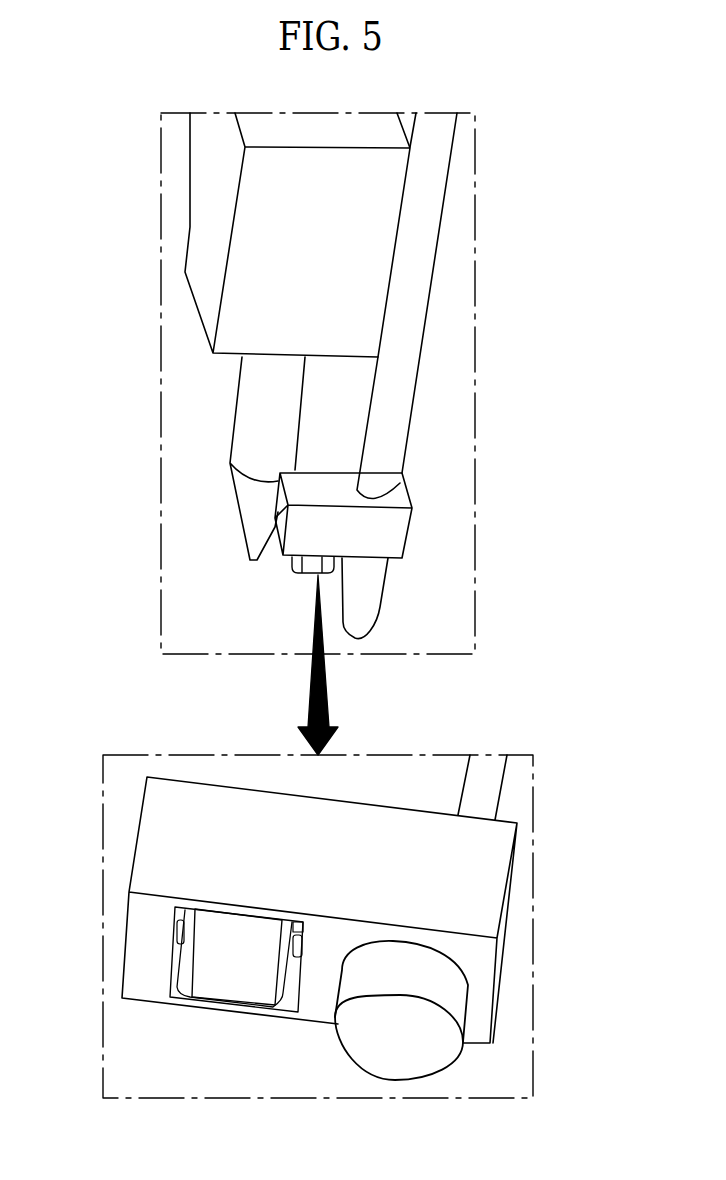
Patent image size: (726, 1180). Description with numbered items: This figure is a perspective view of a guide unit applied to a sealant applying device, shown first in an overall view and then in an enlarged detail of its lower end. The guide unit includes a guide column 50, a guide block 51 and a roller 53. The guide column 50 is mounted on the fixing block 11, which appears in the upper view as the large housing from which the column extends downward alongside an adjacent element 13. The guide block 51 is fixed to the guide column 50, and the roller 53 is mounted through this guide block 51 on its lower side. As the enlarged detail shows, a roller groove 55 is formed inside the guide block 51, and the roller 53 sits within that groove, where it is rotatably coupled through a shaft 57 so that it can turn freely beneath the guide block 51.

The fixing block 11 is at (208, 175).
The support pillar 13 is at (247, 417).
The guide column 50 is at (413, 325).
The guide block 51 is at (397, 527).
The roller 53 is at (305, 572).
The roller groove 55 is at (177, 994).
The shaft 57 is at (178, 935).